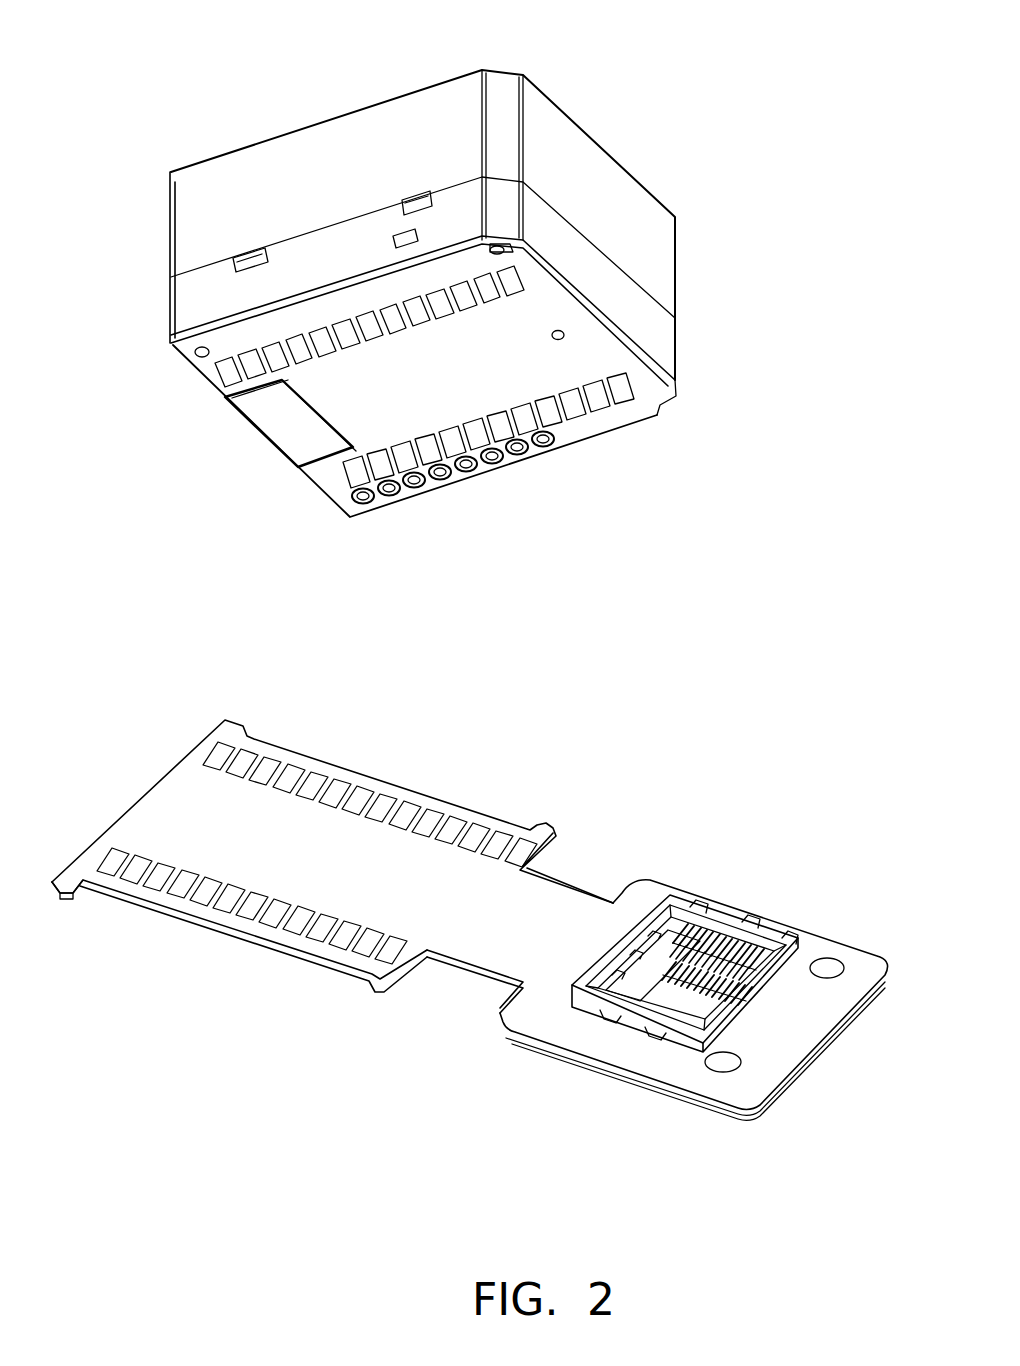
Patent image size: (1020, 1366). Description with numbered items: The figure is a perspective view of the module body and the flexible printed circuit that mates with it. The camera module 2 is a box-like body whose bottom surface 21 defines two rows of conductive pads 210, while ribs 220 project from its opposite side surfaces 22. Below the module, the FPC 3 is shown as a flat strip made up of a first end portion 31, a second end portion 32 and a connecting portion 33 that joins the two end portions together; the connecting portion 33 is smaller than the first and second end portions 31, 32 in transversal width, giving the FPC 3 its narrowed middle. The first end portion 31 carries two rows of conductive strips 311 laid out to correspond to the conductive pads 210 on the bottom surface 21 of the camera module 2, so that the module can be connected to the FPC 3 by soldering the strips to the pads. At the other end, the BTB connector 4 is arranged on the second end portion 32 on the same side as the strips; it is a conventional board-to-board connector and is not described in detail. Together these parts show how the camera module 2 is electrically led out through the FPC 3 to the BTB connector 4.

The camera module 2 is at (327, 178).
The bottom surface 21 is at (533, 368).
The conductive pads 210 is at (483, 433).
The side surfaces 22 is at (193, 202).
The ribs 220 is at (236, 262).
The FPC 3 is at (387, 845).
The first end portion 31 is at (83, 863).
The contact pads 311 is at (228, 902).
The second end portion 32 is at (637, 1050).
The connecting portion 33 is at (482, 940).
The BTB connector 4 is at (705, 943).